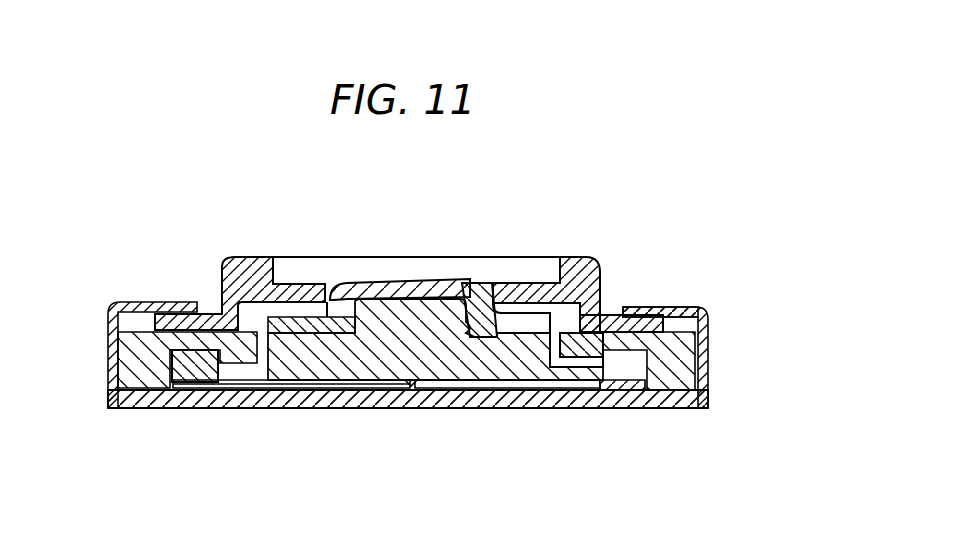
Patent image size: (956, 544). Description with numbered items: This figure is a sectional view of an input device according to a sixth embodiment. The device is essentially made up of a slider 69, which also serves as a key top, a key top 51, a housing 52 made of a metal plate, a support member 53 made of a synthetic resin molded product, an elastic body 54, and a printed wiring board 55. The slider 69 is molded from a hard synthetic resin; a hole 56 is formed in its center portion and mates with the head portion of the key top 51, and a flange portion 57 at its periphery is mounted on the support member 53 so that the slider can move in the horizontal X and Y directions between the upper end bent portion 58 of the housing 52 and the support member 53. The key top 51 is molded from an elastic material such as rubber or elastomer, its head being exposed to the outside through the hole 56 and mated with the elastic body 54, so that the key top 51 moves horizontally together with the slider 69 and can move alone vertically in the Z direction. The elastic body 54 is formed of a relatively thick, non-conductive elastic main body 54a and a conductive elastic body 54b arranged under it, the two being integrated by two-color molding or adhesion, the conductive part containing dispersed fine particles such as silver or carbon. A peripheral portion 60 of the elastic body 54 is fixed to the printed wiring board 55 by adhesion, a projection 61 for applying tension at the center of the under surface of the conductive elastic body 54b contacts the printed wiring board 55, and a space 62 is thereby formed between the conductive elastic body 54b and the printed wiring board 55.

The key top 51 is at (450, 283).
The housing 52 is at (712, 320).
The support member 53 is at (703, 377).
The elastic body 54 is at (291, 425).
The elastic main body 54a is at (288, 438).
The conductive elastic body 54b is at (304, 390).
The printed wiring board 55 is at (664, 398).
The hole 56 is at (337, 280).
The flange portion 57 is at (615, 317).
The upper end bent portion 58 is at (657, 307).
The peripheral portion 60 is at (618, 390).
The projection 61 is at (413, 388).
The space 62 is at (488, 392).
The slider 69 is at (578, 257).